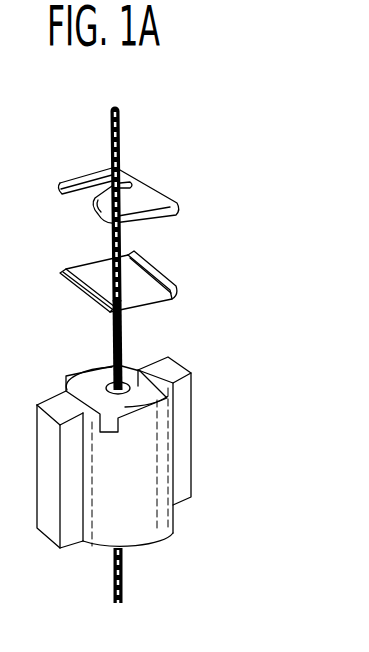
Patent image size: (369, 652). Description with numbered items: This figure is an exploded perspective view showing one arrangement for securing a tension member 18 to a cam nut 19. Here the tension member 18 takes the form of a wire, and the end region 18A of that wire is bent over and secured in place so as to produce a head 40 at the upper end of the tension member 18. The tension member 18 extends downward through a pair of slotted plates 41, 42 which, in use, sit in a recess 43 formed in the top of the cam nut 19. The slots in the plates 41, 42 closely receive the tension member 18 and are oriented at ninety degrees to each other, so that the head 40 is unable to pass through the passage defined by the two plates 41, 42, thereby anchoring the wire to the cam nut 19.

The tension member 18 is at (112, 340).
The end region 18A is at (108, 129).
The head 40 is at (128, 127).
The slotted plate 41 is at (150, 197).
The slotted plate 42 is at (147, 283).
The recess 43 is at (125, 372).
The cam nut 19 is at (137, 532).